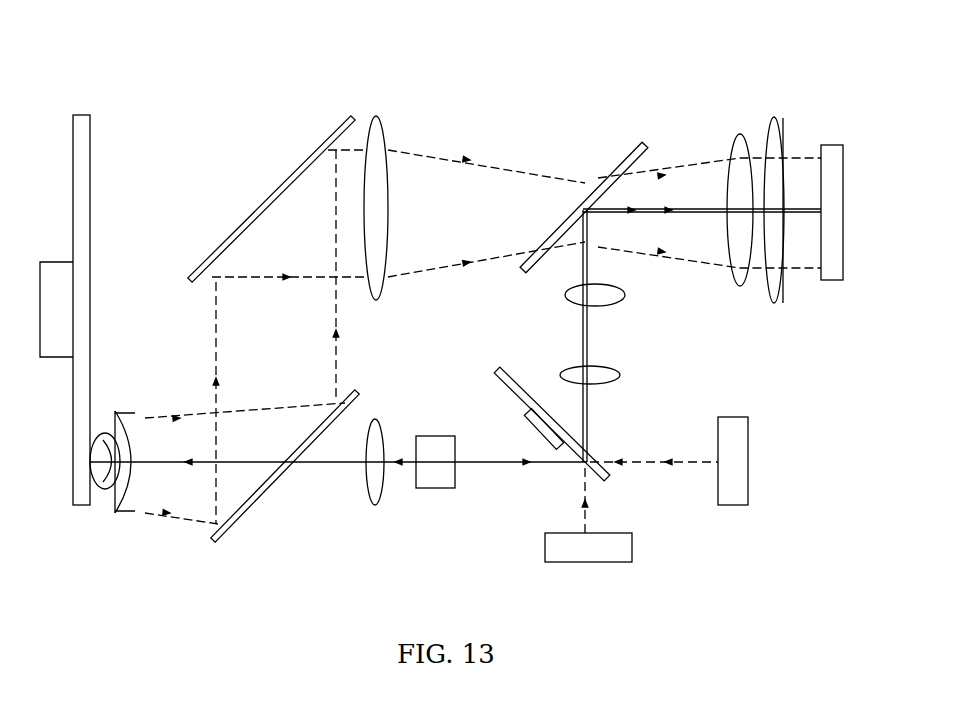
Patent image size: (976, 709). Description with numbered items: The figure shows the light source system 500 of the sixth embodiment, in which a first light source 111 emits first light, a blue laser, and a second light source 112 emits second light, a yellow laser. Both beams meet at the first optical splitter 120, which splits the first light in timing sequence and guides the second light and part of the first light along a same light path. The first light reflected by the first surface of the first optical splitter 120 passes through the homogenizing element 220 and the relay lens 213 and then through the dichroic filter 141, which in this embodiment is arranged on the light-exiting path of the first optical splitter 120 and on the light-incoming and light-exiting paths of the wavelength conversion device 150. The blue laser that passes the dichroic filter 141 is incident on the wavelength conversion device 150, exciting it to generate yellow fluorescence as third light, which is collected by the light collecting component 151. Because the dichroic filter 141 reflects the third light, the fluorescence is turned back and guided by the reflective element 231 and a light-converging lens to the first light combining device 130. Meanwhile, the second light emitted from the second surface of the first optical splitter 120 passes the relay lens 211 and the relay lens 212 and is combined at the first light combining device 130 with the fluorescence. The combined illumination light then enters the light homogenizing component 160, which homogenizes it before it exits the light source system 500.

The light source system 500 is at (404, 56).
The wavelength conversion device 150 is at (90, 197).
The light collecting component 151 is at (123, 493).
The reflective element 231 is at (266, 207).
The first light combining device 130 is at (642, 156).
The light homogenizing component 160 is at (833, 145).
The relay lens 212 is at (618, 298).
The relay lens 211 is at (612, 375).
The first optical splitter 120 is at (497, 372).
The dichroic filter 141 is at (238, 512).
The relay lens 213 is at (378, 495).
The homogenizing element 220 is at (458, 482).
The first light source 111 is at (627, 551).
The second light source 112 is at (740, 468).